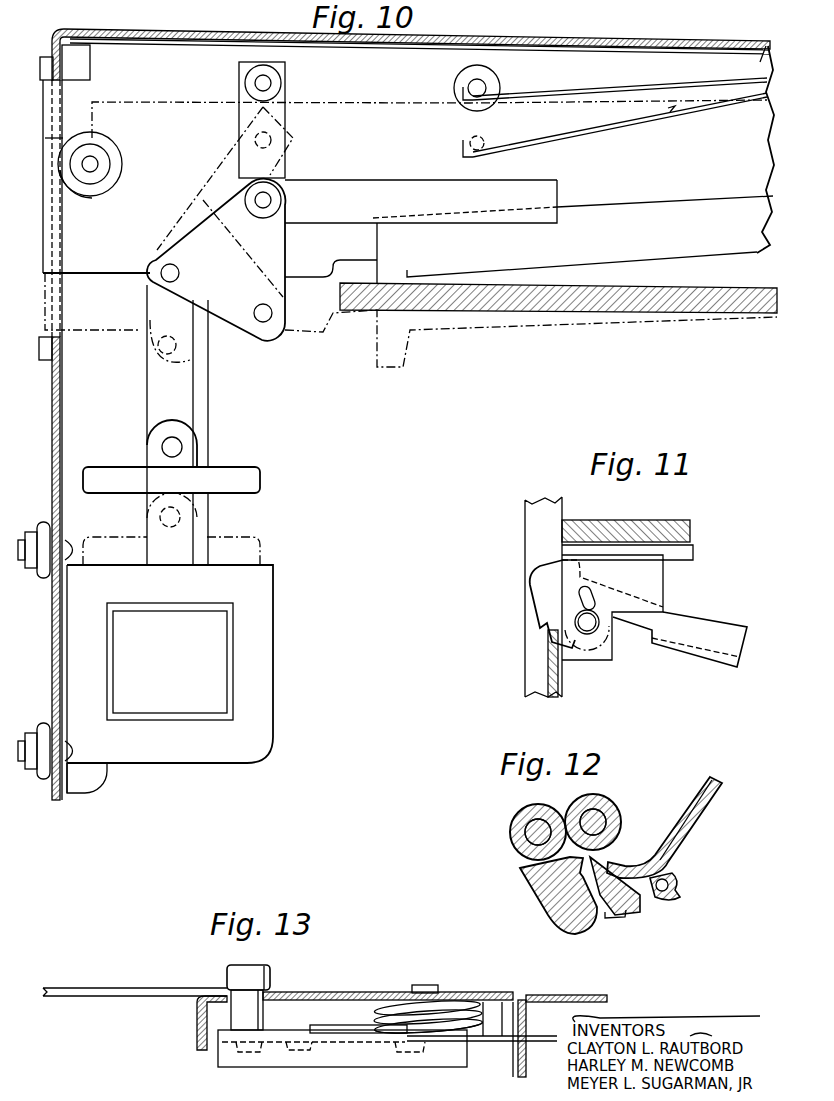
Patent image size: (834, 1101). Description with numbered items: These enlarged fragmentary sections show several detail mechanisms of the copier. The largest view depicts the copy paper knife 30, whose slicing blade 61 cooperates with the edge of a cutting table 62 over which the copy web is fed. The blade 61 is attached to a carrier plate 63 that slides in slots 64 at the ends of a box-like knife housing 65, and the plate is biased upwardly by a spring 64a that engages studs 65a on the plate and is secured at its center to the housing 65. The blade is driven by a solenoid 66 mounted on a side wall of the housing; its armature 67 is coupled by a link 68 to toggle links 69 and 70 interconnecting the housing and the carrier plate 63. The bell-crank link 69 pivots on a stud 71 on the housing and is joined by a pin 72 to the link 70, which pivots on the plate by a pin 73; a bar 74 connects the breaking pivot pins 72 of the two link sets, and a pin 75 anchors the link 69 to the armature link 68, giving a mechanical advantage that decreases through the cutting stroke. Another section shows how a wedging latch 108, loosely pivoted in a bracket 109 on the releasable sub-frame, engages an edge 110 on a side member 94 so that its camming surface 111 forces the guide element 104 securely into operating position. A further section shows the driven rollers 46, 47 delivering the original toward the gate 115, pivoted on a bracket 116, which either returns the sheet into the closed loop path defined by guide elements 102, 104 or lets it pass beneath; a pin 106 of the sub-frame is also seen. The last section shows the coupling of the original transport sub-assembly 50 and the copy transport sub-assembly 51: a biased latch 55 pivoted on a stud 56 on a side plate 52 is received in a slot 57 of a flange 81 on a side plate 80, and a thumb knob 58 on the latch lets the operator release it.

In FIG. 10, the copy paper knife 30 is at (711, 36).
In FIG. 12, the driven roller 46 is at (534, 811).
In FIG. 12, the driven roller 47 is at (612, 812).
In FIG. 13, the original transport sub-assembly 50 is at (571, 990).
In FIG. 13, the copy transport sub-assembly 51 is at (489, 991).
In FIG. 13, the side plates 52 is at (340, 993).
In FIG. 13, the biased latch 55 is at (356, 1062).
In FIG. 13, the stud 56 is at (440, 1001).
In FIG. 13, the slot 57 is at (527, 1033).
In FIG. 13, the thumb knob 58 is at (272, 976).
In FIG. 10, the slicing blade 61 is at (678, 248).
In FIG. 10, the cutting table 62 is at (527, 305).
In FIG. 10, the carrier plate 63 is at (760, 62).
In FIG. 10, the slot 64 is at (62, 316).
In FIG. 10, the spring 64a is at (707, 92).
In FIG. 10, the knife housing 65 is at (622, 43).
In FIG. 10, the stud 65a is at (485, 83).
In FIG. 10, the solenoid 66 is at (268, 640).
In FIG. 10, the armature 67 is at (228, 472).
In FIG. 10, the link 68 is at (190, 413).
In FIG. 10, the toggle link 69 is at (285, 242).
In FIG. 10, the toggle link 70 is at (285, 172).
In FIG. 10, the stud 71 is at (270, 328).
In FIG. 10, the pin 72 is at (282, 200).
In FIG. 10, the pin 73 is at (272, 83).
In FIG. 10, the bar 74 is at (386, 181).
In FIG. 10, the pin 75 is at (170, 272).
In FIG. 13, the side plate 80 is at (598, 996).
In FIG. 13, the flange 81 is at (518, 1068).
In FIG. 11, the side member 94 is at (526, 682).
In FIG. 12, the guide element 102 is at (697, 804).
In FIG. 11, the guide element 104 is at (690, 536).
In FIG. 12, the guide element 104 is at (709, 826).
In FIG. 12, the pin 106 is at (668, 888).
In FIG. 11, the wedging latch 108 is at (741, 654).
In FIG. 11, the bracket 109 is at (665, 593).
In FIG. 11, the edge 110 is at (540, 620).
In FIG. 11, the camming surface 111 is at (533, 576).
In FIG. 12, the gate 115 is at (612, 910).
In FIG. 12, the bracket 116 is at (637, 908).